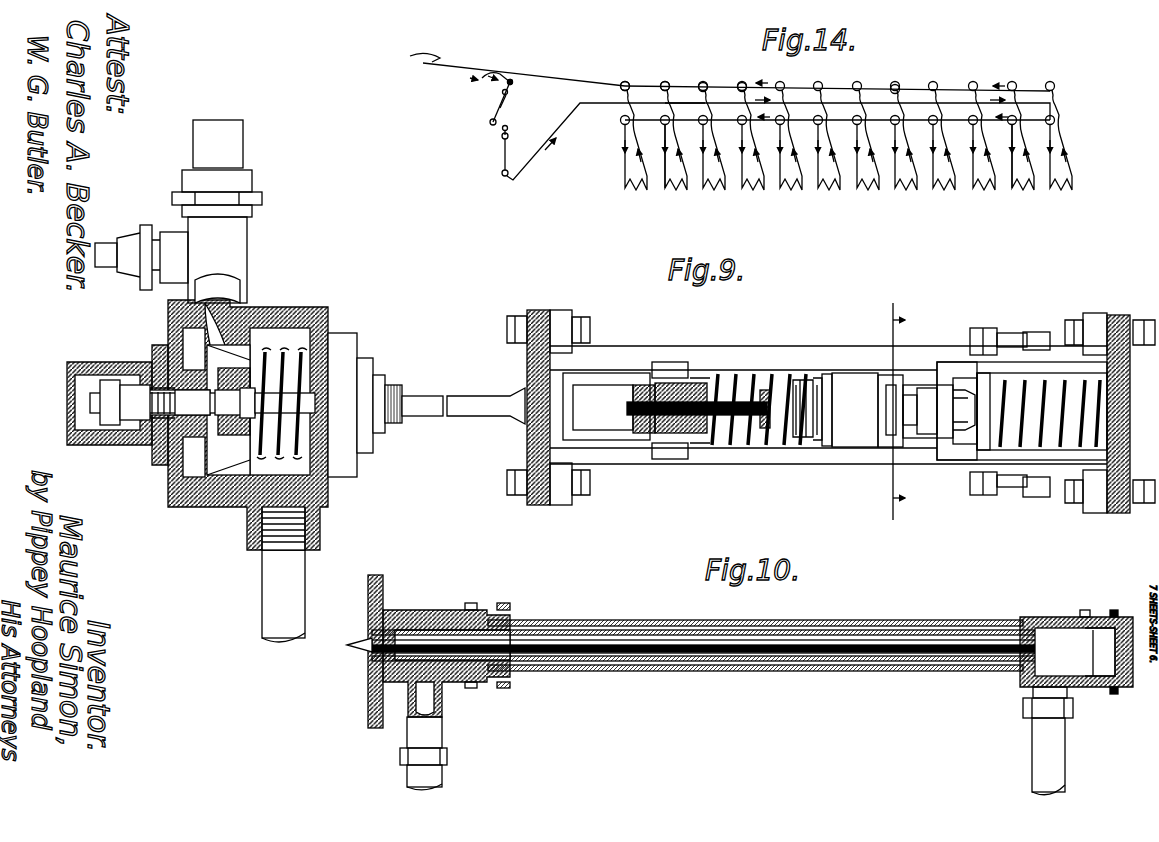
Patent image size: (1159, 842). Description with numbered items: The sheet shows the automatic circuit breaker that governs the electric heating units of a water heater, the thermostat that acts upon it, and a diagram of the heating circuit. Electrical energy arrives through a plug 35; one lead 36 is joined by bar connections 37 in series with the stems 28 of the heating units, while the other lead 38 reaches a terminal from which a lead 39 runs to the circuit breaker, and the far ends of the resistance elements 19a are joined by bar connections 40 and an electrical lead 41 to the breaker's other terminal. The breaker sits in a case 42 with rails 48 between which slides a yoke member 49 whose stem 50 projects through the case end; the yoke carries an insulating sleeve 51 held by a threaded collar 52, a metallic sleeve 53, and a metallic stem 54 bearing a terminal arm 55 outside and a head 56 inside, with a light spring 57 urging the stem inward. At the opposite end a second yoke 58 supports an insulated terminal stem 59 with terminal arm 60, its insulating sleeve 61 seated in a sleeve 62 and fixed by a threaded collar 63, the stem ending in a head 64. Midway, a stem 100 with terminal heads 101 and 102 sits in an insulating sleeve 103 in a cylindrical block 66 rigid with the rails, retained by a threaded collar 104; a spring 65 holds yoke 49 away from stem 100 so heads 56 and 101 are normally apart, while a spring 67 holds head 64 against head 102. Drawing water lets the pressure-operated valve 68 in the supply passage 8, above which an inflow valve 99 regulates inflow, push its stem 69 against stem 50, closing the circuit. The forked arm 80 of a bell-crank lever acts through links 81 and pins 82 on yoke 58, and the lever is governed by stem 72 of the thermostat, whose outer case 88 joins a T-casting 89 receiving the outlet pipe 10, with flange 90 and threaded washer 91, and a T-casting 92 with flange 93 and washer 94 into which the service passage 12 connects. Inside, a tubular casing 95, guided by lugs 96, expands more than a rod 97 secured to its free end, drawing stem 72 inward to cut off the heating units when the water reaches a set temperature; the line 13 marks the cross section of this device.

In FIG. 9, the supply passage 8 is at (238, 381).
In FIG. 10, the outlet passage 10 is at (1052, 742).
In FIG. 10, the service passage 12 is at (440, 775).
In FIG. 9, the section line 13 is at (885, 411).
In FIG. 14, the resistance element 19a is at (670, 193).
In FIG. 14, the stems 28 is at (662, 84).
In FIG. 14, the plug 35 is at (512, 69).
In FIG. 14, the lead 36 is at (622, 84).
In FIG. 14, the bar connections 37 is at (662, 85).
In FIG. 14, the lead 38 is at (486, 82).
In FIG. 14, the lead 39 is at (513, 84).
In FIG. 14, the bar connections 40 is at (690, 104).
In FIG. 14, the electrical lead 41 is at (603, 104).
In FIG. 9, the case 42 is at (1118, 513).
In FIG. 10, the case 42 is at (384, 588).
In FIG. 9, the rails 48 is at (745, 355).
In FIG. 9, the sliding yoke member 49 is at (630, 445).
In FIG. 9, the stem 50 is at (483, 408).
In FIG. 9, the sleeve 51 is at (668, 460).
In FIG. 9, the threaded collar 52 is at (692, 448).
In FIG. 9, the metallic sleeve 53 is at (648, 445).
In FIG. 14, the metallic stem 54 is at (503, 106).
In FIG. 9, the metallic stem 54 is at (685, 409).
In FIG. 14, the terminal arm 55 is at (508, 94).
In FIG. 9, the head 56 is at (790, 448).
In FIG. 9, the light spring 57 is at (760, 450).
In FIG. 9, the second terminal carrying yoke 58 is at (990, 373).
In FIG. 14, the insulated terminal stem 59 is at (503, 157).
In FIG. 14, the terminal arm 60 is at (503, 175).
In FIG. 9, the sleeve 61 is at (905, 425).
In FIG. 9, the sleeve 62 is at (950, 362).
In FIG. 9, the threaded collar 63 is at (922, 435).
In FIG. 9, the head 64 is at (920, 385).
In FIG. 9, the spring 65 is at (800, 372).
In FIG. 9, the cylindrical block 66 is at (855, 410).
In FIG. 9, the spring 67 is at (1050, 373).
In FIG. 9, the pressure-operated valve 68 is at (237, 475).
In FIG. 9, the stem 69 is at (425, 405).
In FIG. 10, the stem 72 is at (360, 648).
In FIG. 9, the arm 80 is at (1035, 332).
In FIG. 9, the links 81 is at (1005, 333).
In FIG. 9, the pins 82 is at (983, 328).
In FIG. 10, the outer case 88 is at (680, 630).
In FIG. 10, the T-casting 89 is at (1050, 622).
In FIG. 10, the annular flange 90 is at (1085, 610).
In FIG. 10, the threaded washer 91 is at (1116, 610).
In FIG. 10, the T-casting 92 is at (440, 610).
In FIG. 10, the annular flange 93 is at (472, 603).
In FIG. 10, the threaded washer 94 is at (505, 603).
In FIG. 10, the tubular casing 95 is at (590, 622).
In FIG. 10, the lugs 96 is at (1096, 680).
In FIG. 10, the rod 97 is at (840, 641).
In FIG. 9, the inflow valve 99 is at (180, 262).
In FIG. 14, the stem 100 is at (503, 130).
In FIG. 14, the terminal head 101 is at (508, 128).
In FIG. 9, the terminal head 101 is at (803, 445).
In FIG. 14, the terminal head 102 is at (509, 138).
In FIG. 9, the terminal head 102 is at (886, 383).
In FIG. 9, the sleeve 103 is at (816, 378).
In FIG. 9, the threaded collar 104 is at (822, 448).